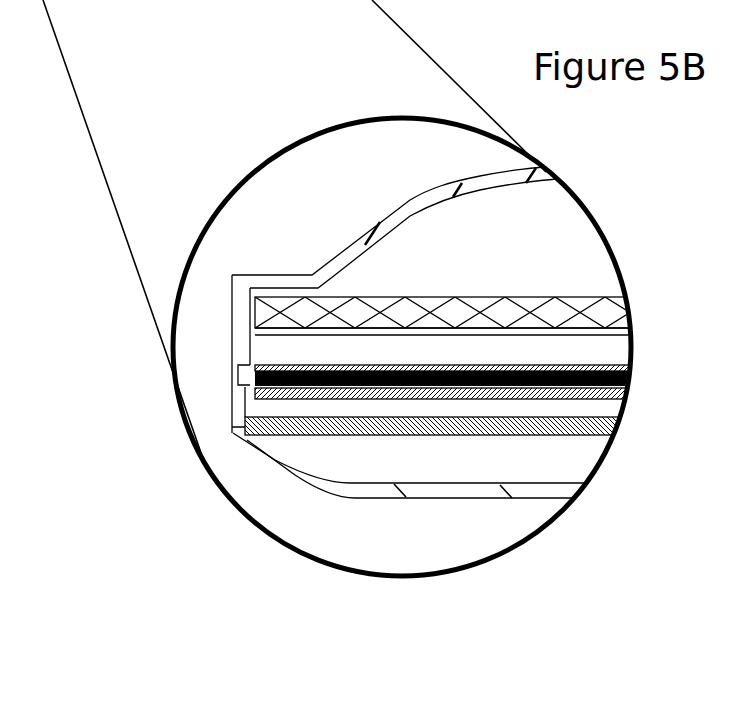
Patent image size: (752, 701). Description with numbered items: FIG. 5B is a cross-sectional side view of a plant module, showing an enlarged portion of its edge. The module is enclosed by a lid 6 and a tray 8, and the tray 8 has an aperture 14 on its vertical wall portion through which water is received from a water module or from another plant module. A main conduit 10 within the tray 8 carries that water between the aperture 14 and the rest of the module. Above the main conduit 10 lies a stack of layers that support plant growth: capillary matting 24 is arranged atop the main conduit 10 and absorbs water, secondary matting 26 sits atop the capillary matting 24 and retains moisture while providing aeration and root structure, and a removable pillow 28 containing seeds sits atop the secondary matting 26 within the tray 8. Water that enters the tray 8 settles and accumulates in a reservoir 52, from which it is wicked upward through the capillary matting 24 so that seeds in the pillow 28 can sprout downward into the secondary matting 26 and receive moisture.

The lid 6 is at (411, 196).
The tray 8 is at (287, 480).
The main conduit 10 is at (288, 415).
The aperture 14 is at (233, 416).
The capillary matting 24 is at (247, 366).
The secondary matting 26 is at (255, 332).
The pillow 28 is at (280, 290).
The reservoir 52 is at (480, 474).